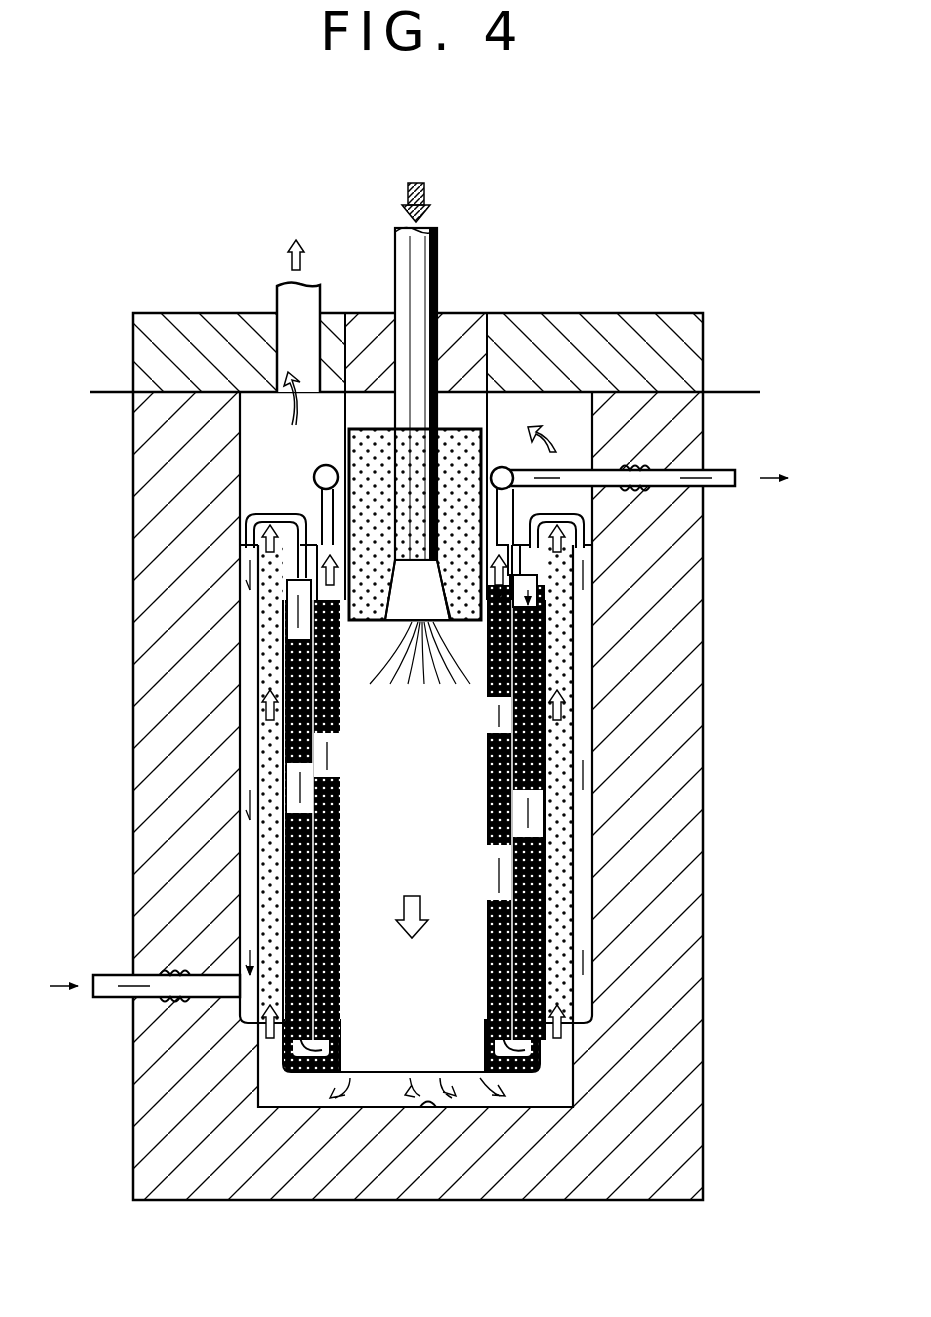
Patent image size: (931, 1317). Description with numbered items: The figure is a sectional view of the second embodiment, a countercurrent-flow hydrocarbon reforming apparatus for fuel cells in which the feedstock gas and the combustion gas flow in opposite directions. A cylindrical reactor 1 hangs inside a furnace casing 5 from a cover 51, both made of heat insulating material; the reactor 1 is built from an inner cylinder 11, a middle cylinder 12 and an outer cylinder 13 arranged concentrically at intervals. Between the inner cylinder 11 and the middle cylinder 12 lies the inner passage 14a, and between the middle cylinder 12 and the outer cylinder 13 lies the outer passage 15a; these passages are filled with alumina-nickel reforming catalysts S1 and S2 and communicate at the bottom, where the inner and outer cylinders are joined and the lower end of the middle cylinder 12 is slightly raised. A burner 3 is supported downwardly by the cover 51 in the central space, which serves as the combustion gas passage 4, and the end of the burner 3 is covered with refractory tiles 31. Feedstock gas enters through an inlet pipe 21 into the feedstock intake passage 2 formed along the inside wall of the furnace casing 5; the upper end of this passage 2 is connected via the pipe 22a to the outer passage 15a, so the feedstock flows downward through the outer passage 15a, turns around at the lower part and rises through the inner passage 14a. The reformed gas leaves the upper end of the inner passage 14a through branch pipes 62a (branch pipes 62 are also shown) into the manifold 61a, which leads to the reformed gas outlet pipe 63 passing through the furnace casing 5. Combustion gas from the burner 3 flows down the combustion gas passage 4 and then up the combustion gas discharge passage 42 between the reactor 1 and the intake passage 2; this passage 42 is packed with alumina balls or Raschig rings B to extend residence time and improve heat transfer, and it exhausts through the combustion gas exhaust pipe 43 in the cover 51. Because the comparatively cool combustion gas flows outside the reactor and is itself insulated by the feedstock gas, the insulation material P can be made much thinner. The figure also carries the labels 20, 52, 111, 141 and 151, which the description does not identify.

The cylindrical reactor 1 is at (546, 605).
The feedstock intake passage 2 is at (244, 725).
The burner 3 is at (395, 412).
The combustion gas passage 4 is at (368, 841).
The furnace casing 5 is at (128, 685).
The inner cylinder 11 is at (487, 765).
The middle cylinder 12 is at (498, 810).
The outer cylinder 13 is at (498, 855).
The inner passage 14a is at (490, 978).
The outer passage 15a is at (490, 1022).
The jacket 20 is at (236, 868).
The inlet pipe 21 is at (100, 974).
The pipe 22a is at (245, 520).
The refractory tiles 31 is at (462, 445).
The combustion gas discharge passage 42 is at (272, 638).
The combustion gas exhaust pipe 43 is at (276, 298).
The cover 51 is at (621, 318).
The drain opening 52 is at (429, 1112).
The manifold 61a is at (508, 458).
The branch pipes 62 is at (318, 502).
The branch pipes 62a is at (508, 490).
The reformed gas outlet pipe 63 is at (680, 468).
The insert block 111 is at (500, 360).
The gas passage 141 is at (330, 540).
The gas passage 151 is at (295, 585).
The alumina balls or Raschig rings B is at (272, 812).
The insulation material P is at (676, 852).
The reforming catalyst S1 is at (428, 682).
The reforming catalyst S2 is at (326, 702).